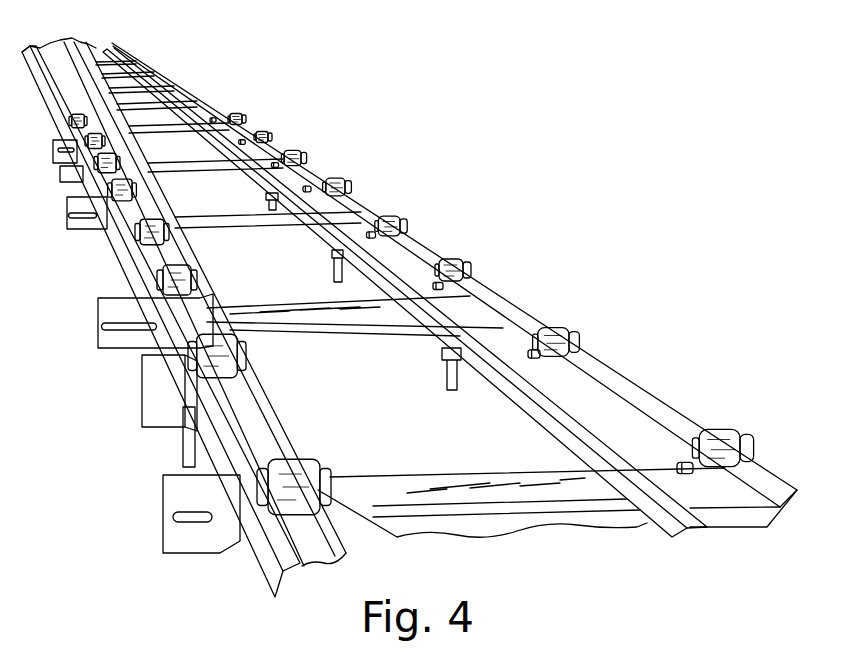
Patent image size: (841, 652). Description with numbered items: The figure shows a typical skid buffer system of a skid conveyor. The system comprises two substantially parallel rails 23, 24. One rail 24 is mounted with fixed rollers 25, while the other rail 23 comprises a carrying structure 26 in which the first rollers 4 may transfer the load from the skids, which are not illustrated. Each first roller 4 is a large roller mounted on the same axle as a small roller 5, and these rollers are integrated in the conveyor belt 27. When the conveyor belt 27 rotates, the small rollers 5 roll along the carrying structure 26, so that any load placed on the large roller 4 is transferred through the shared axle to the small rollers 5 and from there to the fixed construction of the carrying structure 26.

The first roller 4 is at (293, 473).
The small roller 5 is at (250, 347).
The rail 23 is at (187, 327).
The rail 24 is at (503, 303).
The fixed roller 25 is at (455, 260).
The carrying structure 26 is at (163, 307).
The conveyor belt 27 is at (240, 425).